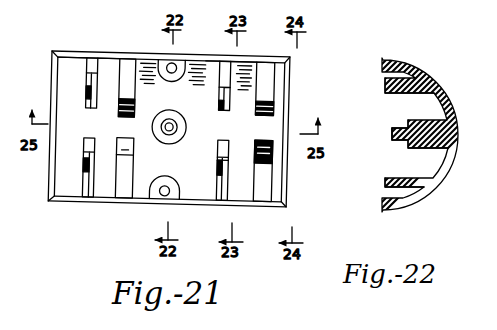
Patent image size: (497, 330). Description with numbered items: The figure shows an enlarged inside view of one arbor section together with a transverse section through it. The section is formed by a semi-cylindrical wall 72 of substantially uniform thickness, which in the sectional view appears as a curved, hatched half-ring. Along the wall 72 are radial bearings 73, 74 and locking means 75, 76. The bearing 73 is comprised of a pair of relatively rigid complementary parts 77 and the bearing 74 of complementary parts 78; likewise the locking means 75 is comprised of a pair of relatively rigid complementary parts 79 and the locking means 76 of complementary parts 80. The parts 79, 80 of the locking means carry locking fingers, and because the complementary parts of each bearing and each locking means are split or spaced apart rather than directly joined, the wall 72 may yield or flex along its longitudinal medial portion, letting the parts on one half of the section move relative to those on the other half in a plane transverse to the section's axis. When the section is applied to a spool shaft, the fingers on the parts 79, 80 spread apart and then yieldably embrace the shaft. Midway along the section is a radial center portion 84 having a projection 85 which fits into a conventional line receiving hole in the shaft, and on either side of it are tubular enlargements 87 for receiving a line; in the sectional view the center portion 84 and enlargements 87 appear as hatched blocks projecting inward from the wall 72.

In FIG. 21, the semi-cylindrical wall 72 is at (67, 68).
In FIG. 22, the semi-cylindrical wall 72 is at (450, 104).
In FIG. 21, the radial bearing 73 is at (118, 74).
In FIG. 21, the radial bearing 74 is at (256, 73).
In FIG. 21, the locking means 75 is at (81, 69).
In FIG. 21, the locking means 76 is at (223, 73).
In FIG. 21, the complementary parts of bearing 77 is at (128, 72).
In FIG. 21, the complementary parts of bearing 78 is at (270, 83).
In FIG. 21, the complementary parts of locking means 79 is at (90, 75).
In FIG. 21, the complementary parts of locking means 80 is at (224, 82).
In FIG. 21, the radial center portion 84 is at (173, 142).
In FIG. 22, the radial center portion 84 is at (458, 138).
In FIG. 21, the projection 85 is at (176, 127).
In FIG. 22, the projection 85 is at (393, 128).
In FIG. 21, the tubular enlargements 87 is at (177, 82).
In FIG. 22, the tubular enlargements 87 is at (398, 93).